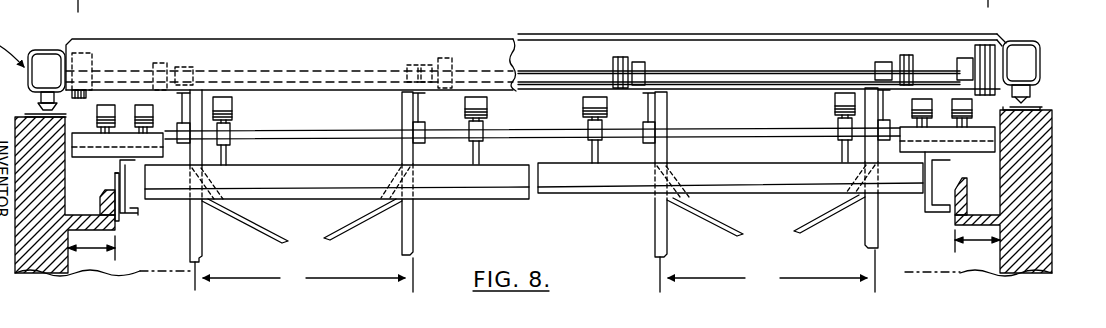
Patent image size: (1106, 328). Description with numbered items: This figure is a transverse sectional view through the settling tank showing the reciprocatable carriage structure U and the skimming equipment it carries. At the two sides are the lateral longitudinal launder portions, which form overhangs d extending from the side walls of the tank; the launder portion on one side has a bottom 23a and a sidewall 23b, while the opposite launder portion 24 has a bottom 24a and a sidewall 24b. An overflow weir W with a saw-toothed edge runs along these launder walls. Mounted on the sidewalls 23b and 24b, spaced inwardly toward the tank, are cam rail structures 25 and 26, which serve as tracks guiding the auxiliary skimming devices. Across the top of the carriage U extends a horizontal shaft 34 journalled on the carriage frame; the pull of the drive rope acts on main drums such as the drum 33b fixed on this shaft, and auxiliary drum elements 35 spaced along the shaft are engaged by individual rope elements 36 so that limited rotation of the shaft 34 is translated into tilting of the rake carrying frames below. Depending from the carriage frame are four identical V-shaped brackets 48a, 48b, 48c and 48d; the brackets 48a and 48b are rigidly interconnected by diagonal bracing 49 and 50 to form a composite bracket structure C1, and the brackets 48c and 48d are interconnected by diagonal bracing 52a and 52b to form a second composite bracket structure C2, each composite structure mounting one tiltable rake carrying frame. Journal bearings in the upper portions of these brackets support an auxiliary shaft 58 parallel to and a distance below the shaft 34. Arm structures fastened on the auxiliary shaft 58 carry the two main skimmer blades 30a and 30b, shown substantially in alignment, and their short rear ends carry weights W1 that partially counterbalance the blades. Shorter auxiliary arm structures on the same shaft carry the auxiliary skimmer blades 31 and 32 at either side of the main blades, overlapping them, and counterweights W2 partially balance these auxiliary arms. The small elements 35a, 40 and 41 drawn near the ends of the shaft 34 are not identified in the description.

The launder bottom 23a is at (118, 222).
The launder sidewall 23b is at (100, 204).
The lateral longitudinal launder portion 24 is at (1001, 203).
The launder bottom 24a is at (988, 208).
The launder sidewall 24b is at (968, 205).
The cam rail structure 25 is at (143, 153).
The cam rail structure 26 is at (930, 150).
The main skimmer blade element 30a is at (336, 194).
The main skimmer blade element 30b is at (734, 192).
The auxiliary skimmer blade element 31 is at (88, 143).
The auxiliary skimmer blade element 32 is at (978, 138).
The main drum 33b is at (1031, 98).
The horizontal shaft 34 is at (742, 76).
The auxiliary drum element 35 is at (161, 63).
The gear 35a is at (84, 97).
The rope element 36 is at (181, 96).
The motor 40 is at (43, 50).
The motor 41 is at (1020, 41).
The V-shaped bracket 48a is at (200, 232).
The V-shaped bracket 48b is at (402, 222).
The V-shaped bracket 48c is at (656, 225).
The V-shaped bracket 48d is at (866, 222).
The diagonal bracing 49 is at (264, 238).
The diagonal bracing 50 is at (343, 242).
The diagonal bracing 52a is at (713, 227).
The diagonal bracing 52b is at (820, 229).
The auxiliary shaft 58 is at (300, 130).
The overflow weir W is at (139, 214).
The counterbalance weight W1 is at (220, 98).
The counterweight W2 is at (145, 107).
The reciprocatable carriage structure U is at (1044, 60).
The overhang d is at (534, 245).
The composite bracket structure C1 is at (304, 275).
The composite bracket structure C2 is at (767, 271).